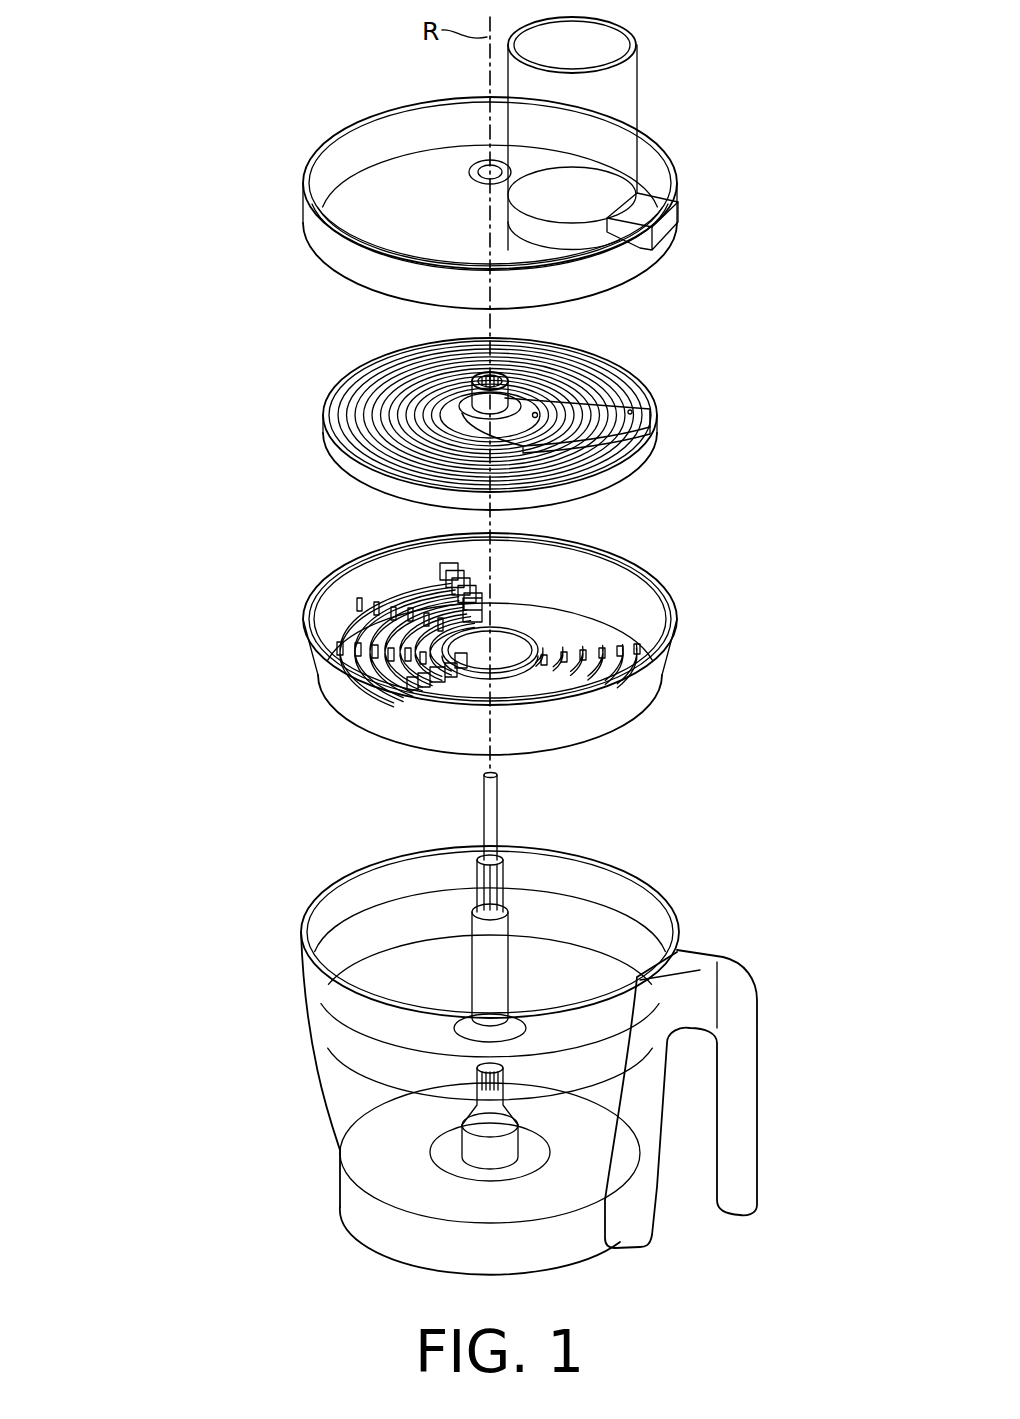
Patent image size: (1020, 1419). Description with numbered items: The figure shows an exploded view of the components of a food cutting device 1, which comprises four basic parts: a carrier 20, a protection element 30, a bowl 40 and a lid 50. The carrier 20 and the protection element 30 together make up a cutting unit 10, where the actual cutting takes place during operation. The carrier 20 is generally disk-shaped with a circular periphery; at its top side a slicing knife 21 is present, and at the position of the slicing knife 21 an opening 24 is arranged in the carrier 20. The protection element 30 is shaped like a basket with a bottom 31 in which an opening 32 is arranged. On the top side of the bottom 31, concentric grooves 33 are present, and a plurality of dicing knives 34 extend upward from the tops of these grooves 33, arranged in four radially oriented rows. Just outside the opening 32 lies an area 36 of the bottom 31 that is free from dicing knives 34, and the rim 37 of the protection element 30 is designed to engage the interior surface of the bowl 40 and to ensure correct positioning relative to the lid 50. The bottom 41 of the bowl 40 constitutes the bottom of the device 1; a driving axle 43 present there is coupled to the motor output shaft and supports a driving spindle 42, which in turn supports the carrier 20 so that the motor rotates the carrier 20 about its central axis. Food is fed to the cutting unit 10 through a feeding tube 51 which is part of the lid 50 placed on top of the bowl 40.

The food cutting device 1 is at (150, 90).
The cutting unit 10 is at (248, 358).
The carrier 20 is at (323, 436).
The slicing knife 21 is at (632, 420).
The opening 24 is at (653, 430).
The protection element 30 is at (313, 678).
The bottom 31 is at (343, 652).
The opening 32 is at (540, 622).
The concentric grooves 33 is at (577, 652).
The dicing knives 34 is at (362, 600).
The area 36 is at (613, 685).
The rim 37 is at (678, 612).
The bowl 40 is at (305, 962).
The bottom 41 is at (350, 1222).
The driving spindle 42 is at (472, 978).
The driving axle 43 is at (475, 1078).
The lid 50 is at (305, 232).
The feeding tube 51 is at (637, 96).